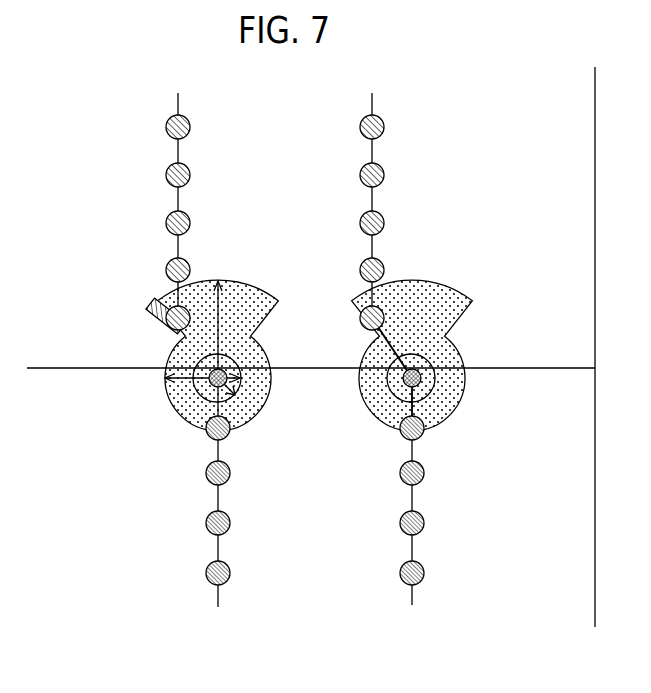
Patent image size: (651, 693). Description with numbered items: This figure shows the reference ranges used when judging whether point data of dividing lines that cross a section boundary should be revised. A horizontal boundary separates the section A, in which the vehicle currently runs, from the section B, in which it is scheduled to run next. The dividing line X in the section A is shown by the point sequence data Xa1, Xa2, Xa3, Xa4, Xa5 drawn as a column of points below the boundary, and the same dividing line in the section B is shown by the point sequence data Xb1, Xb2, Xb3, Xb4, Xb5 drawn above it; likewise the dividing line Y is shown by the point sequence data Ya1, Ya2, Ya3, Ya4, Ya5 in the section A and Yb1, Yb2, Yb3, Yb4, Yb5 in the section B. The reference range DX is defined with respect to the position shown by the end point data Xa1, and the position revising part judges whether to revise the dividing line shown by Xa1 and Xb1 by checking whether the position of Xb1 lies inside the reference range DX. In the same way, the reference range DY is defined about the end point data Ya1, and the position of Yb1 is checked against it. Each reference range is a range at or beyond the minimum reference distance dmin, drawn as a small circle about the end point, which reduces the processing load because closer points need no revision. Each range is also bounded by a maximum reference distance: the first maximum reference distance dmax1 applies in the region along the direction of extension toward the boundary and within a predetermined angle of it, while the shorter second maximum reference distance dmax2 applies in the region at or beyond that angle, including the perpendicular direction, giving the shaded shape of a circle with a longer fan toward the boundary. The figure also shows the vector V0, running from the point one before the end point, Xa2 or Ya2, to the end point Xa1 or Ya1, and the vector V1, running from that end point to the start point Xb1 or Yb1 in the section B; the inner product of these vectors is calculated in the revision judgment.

The point data Xa1 is at (200, 396).
The point data Xa2 is at (208, 437).
The point sequence data Xa3 is at (208, 482).
The point sequence data Xa4 is at (208, 532).
The point sequence data Xa5 is at (208, 582).
The point data Xb1 is at (150, 303).
The point sequence data Xb2 is at (168, 262).
The point sequence data Xb3 is at (168, 215).
The point sequence data Xb4 is at (168, 167).
The point sequence data Xb5 is at (168, 119).
The point data Ya1 is at (430, 392).
The point data Ya2 is at (421, 437).
The point sequence data Ya3 is at (421, 482).
The point sequence data Ya4 is at (421, 532).
The point sequence data Ya5 is at (421, 582).
The point data Yb1 is at (381, 306).
The point sequence data Yb2 is at (382, 262).
The point sequence data Yb3 is at (382, 215).
The point sequence data Yb4 is at (382, 167).
The point sequence data Yb5 is at (382, 119).
The reference range DX is at (165, 358).
The reference range DY is at (460, 334).
The first maximum reference distance dmax1 is at (282, 276).
The second maximum reference distance dmax2 is at (162, 380).
The minimum reference distance dmin is at (237, 398).
The vector V0 is at (400, 412).
The vector V1 is at (375, 353).
The section A is at (580, 347).
The section B is at (311, 353).